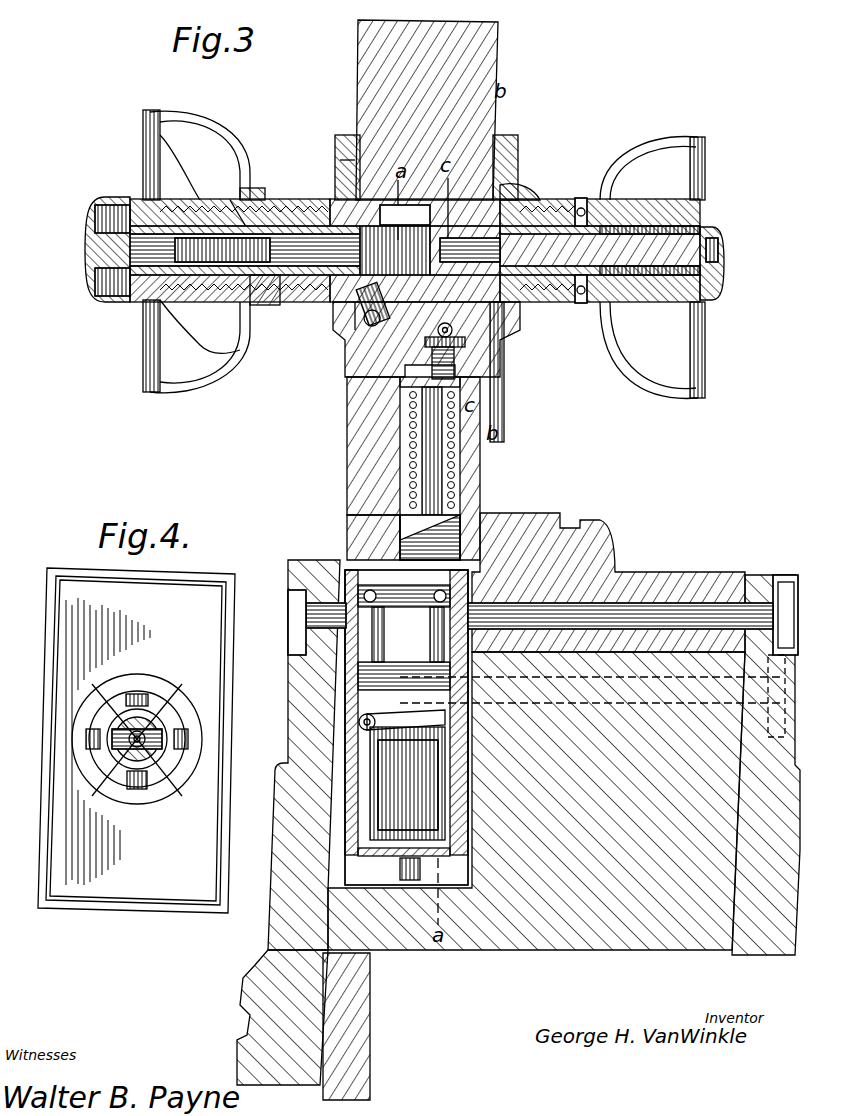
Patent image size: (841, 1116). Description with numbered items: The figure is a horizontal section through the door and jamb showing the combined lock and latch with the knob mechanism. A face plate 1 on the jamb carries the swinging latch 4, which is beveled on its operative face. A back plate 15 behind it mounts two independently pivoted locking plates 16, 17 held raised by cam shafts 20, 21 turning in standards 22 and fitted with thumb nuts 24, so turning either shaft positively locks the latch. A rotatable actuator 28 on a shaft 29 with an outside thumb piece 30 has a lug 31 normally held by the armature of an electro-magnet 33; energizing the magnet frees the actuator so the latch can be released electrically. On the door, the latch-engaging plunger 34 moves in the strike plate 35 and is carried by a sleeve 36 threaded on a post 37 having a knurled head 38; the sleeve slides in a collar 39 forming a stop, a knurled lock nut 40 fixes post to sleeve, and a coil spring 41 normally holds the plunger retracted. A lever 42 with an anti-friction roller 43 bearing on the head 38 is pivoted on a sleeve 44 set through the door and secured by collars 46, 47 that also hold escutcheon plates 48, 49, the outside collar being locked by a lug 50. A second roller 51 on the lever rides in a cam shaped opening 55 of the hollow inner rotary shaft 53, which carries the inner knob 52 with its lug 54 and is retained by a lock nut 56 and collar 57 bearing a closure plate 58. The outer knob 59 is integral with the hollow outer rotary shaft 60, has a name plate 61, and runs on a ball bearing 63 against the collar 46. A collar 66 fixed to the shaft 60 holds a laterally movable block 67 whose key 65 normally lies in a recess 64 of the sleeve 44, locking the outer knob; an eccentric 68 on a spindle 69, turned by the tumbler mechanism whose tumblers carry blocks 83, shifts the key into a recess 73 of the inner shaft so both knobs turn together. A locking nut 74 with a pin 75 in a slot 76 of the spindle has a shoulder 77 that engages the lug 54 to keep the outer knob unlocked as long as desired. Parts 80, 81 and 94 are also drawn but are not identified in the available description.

In FIG. 3, the face plate 1 is at (404, 596).
In FIG. 3, the swinging latch 4 is at (415, 545).
In FIG. 3, the back plate 15 is at (590, 689).
In FIG. 3, the pivoted locking plate 16 is at (440, 655).
In FIG. 3, the pivoted locking plate 17 is at (380, 648).
In FIG. 3, the cam shaft 20 is at (640, 612).
In FIG. 3, the cam shaft 21 is at (530, 565).
In FIG. 3, the standards 22 is at (370, 625).
In FIG. 3, the thumb nuts 24 is at (292, 602).
In FIG. 3, the rotatable actuator 28 is at (404, 678).
In FIG. 3, the shaft 29 is at (440, 700).
In FIG. 3, the operating thumb piece 30 is at (782, 735).
In FIG. 3, the lug 31 is at (445, 712).
In FIG. 3, the electro-magnet 33 is at (407, 803).
In FIG. 3, the latch-engaging plunger 34 is at (402, 713).
In FIG. 3, the strike plate 35 is at (395, 535).
In FIG. 3, the sleeve 36 is at (440, 447).
In FIG. 3, the post 37 is at (455, 362).
In FIG. 3, the knurled head 38 is at (452, 332).
In FIG. 3, the collar 39 is at (452, 465).
In FIG. 3, the knurled lock nut 40 is at (470, 380).
In FIG. 3, the coil spring 41 is at (410, 460).
In FIG. 3, the lever 42 is at (388, 315).
In FIG. 3, the anti-friction roller 43 is at (528, 302).
In FIG. 3, the sleeve 44 is at (340, 160).
In FIG. 4, the sleeve 44 is at (182, 780).
In FIG. 3, the collar 46 is at (520, 195).
In FIG. 4, the collar 46 is at (90, 742).
In FIG. 3, the collar 47 is at (340, 200).
In FIG. 3, the escutcheon plate 48 is at (500, 145).
In FIG. 4, the escutcheon plate 48 is at (136, 740).
In FIG. 3, the escutcheon plate 49 is at (345, 140).
In FIG. 4, the lug 50 is at (140, 700).
In FIG. 3, the anti-friction roller 51 is at (330, 255).
In FIG. 3, the inner knob 52 is at (180, 375).
In FIG. 3, the inner rotary shaft 53 is at (210, 228).
In FIG. 3, the lug 54 is at (265, 292).
In FIG. 3, the cam shaped opening 55 is at (372, 326).
In FIG. 3, the lock nut 56 is at (255, 190).
In FIG. 3, the collar 57 is at (170, 312).
In FIG. 3, the closure plate 58 is at (172, 150).
In FIG. 3, the outer knob 59 is at (650, 140).
In FIG. 3, the outer rotary shaft 60 is at (640, 228).
In FIG. 4, the outer rotary shaft 60 is at (115, 748).
In FIG. 3, the cover or name plate 61 is at (700, 190).
In FIG. 3, the ball bearing 63 is at (630, 212).
In FIG. 3, the recess 64 is at (425, 208).
In FIG. 3, the key 65 is at (508, 155).
In FIG. 3, the collar 66 is at (580, 206).
In FIG. 4, the collar 66 is at (138, 760).
In FIG. 3, the block 67 is at (430, 250).
In FIG. 4, the eccentric 68 is at (125, 760).
In FIG. 3, the spindle 69 is at (330, 255).
In FIG. 4, the spindle 69 is at (150, 730).
In FIG. 3, the recess 73 is at (506, 175).
In FIG. 3, the locking nut 74 is at (96, 282).
In FIG. 3, the pin 75 is at (255, 255).
In FIG. 3, the slot 76 is at (238, 222).
In FIG. 3, the annular shoulder 77 is at (210, 270).
In FIG. 3, the pin 80 is at (499, 265).
In FIG. 3, the ring 81 is at (578, 305).
In FIG. 3, the block 83 is at (612, 312).
In FIG. 3, the end cap 94 is at (720, 262).